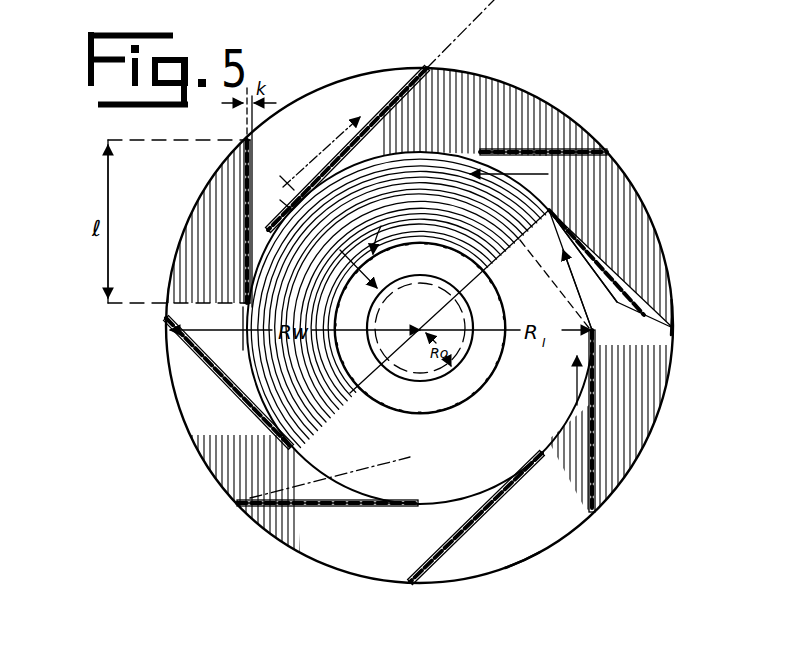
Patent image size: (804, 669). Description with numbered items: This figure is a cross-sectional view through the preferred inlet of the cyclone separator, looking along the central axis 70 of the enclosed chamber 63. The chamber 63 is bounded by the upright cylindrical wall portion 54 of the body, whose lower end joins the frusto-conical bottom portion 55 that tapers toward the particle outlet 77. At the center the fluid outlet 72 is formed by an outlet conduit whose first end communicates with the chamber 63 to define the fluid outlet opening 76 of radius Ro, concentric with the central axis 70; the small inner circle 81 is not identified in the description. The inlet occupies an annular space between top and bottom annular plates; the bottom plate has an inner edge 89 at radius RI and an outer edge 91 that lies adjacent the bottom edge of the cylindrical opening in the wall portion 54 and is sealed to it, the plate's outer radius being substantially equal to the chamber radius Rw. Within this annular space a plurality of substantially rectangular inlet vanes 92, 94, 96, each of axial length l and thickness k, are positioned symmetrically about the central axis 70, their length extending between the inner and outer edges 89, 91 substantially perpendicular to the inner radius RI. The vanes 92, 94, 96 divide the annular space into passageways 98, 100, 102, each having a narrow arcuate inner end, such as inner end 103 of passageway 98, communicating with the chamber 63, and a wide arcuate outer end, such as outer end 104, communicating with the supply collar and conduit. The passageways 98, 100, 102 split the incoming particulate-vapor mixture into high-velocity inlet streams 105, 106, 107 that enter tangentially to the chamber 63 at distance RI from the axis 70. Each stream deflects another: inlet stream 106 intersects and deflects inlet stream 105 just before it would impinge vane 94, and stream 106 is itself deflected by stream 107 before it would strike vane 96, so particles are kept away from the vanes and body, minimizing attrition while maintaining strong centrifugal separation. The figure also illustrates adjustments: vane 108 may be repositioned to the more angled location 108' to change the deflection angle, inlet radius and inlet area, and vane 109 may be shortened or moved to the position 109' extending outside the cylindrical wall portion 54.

The upright cylindrical wall portion 54 is at (362, 70).
The frusto-conical bottom portion 55 is at (282, 440).
The enclosed chamber 63 is at (305, 287).
The central axis 70 is at (439, 316).
The fluid outlet 72 is at (374, 227).
The fluid outlet opening 76 is at (433, 269).
The particle outlet 77 is at (346, 262).
The hub 81 is at (420, 303).
The inner edge of bottom annular plate 89 is at (286, 212).
The outer edge of lower annular plate 91 is at (288, 107).
The inlet vane 92 is at (594, 472).
The inlet vane 94 is at (657, 305).
The inlet vane 96 is at (575, 150).
The passageway 98 is at (541, 526).
The passageway 100 is at (660, 368).
The passageway 102 is at (636, 260).
The inner end of passageway 103 is at (546, 444).
The outer end of passageway 104 is at (524, 559).
The inlet stream 105 is at (577, 391).
The inlet stream 106 is at (610, 306).
The inlet stream 107 is at (531, 178).
The inlet vane 108 is at (343, 490).
The inlet vane 108' is at (364, 475).
The inlet vane 109 is at (348, 149).
The inlet vane 109' is at (491, 34).